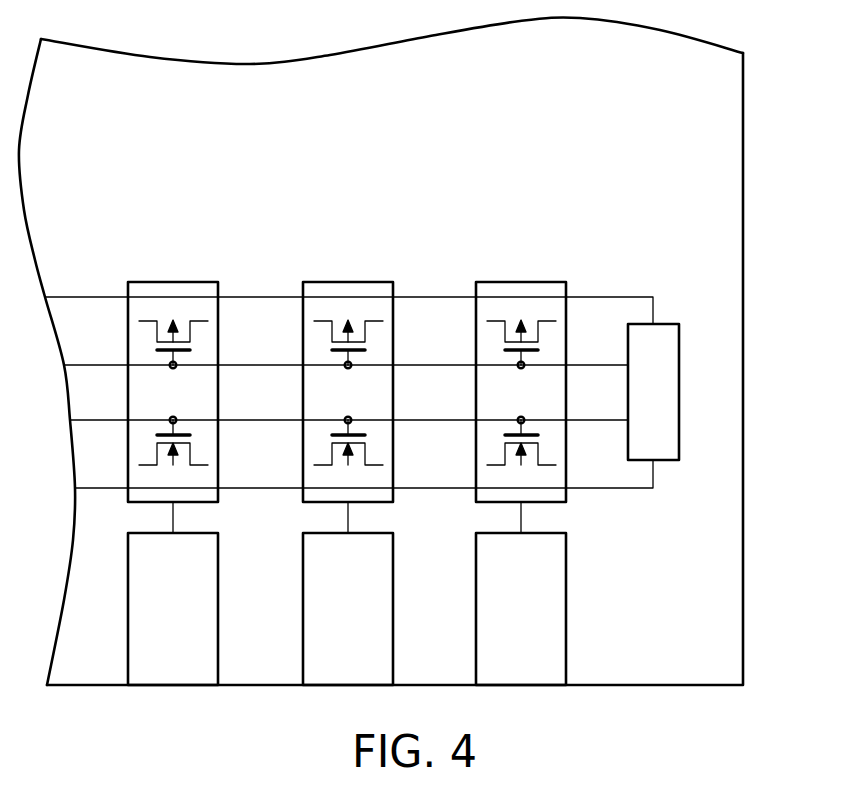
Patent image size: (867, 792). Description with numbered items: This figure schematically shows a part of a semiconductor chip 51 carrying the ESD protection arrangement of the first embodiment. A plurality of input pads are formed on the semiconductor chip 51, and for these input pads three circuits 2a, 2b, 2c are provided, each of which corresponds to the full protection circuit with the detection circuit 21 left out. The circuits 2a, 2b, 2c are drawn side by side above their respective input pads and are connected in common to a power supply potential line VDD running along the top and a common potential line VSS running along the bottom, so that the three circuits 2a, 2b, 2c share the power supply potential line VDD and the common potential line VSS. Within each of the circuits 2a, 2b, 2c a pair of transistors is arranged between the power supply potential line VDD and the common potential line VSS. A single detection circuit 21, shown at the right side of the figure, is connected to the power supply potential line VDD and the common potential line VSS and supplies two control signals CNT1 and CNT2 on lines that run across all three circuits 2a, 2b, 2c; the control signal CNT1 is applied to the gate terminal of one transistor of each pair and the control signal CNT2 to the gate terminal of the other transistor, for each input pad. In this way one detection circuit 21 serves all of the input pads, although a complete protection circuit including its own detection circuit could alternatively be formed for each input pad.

The semiconductor chip 51 is at (745, 165).
The circuit 2a is at (521, 282).
The circuit 2b is at (348, 282).
The circuit 2c is at (173, 282).
The detection circuit 21 is at (668, 462).
The power supply potential line VDD is at (612, 297).
The common potential line VSS is at (600, 490).
The control signal CNT1 is at (412, 366).
The control signal CNT2 is at (283, 418).